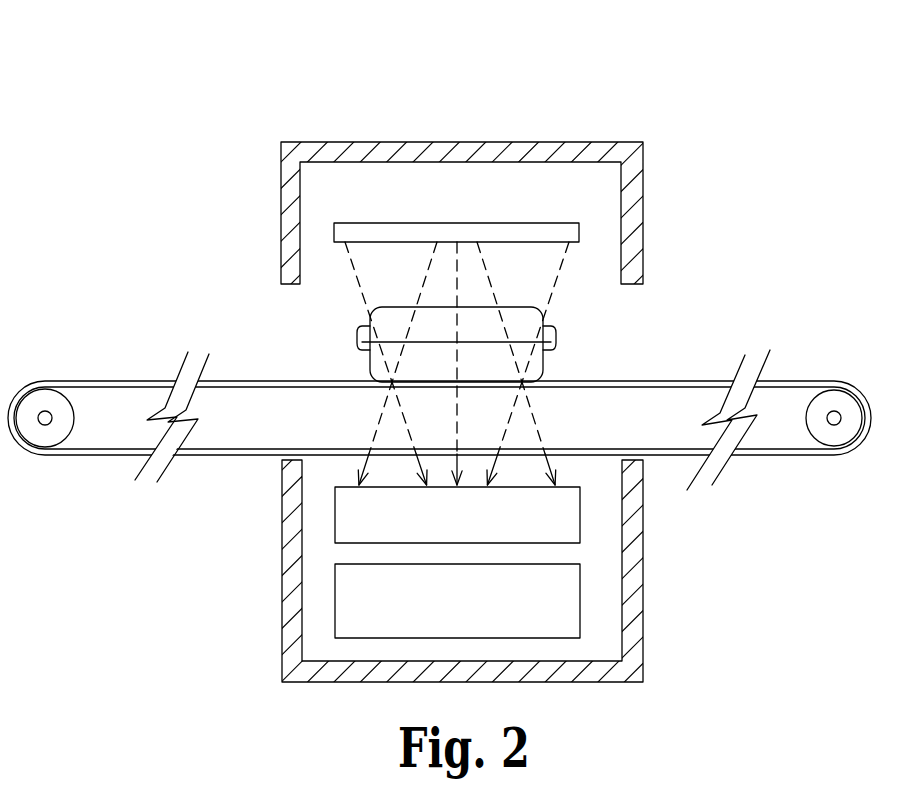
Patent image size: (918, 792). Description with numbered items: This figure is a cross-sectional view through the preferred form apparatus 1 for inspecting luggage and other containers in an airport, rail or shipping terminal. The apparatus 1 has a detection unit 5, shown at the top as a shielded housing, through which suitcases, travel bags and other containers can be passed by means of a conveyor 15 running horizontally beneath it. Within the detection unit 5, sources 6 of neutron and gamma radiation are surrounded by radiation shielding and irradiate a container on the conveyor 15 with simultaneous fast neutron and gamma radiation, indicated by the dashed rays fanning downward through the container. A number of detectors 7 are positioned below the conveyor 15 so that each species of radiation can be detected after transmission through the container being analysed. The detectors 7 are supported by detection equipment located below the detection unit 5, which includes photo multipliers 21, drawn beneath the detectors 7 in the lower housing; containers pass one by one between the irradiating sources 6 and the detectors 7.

The apparatus 1 is at (520, 112).
The detection unit 5 is at (288, 207).
The sources of neutron and gamma radiation 6 is at (560, 231).
The detectors 7 is at (553, 513).
The conveyor 15 is at (97, 381).
The photo multipliers 21 is at (552, 603).